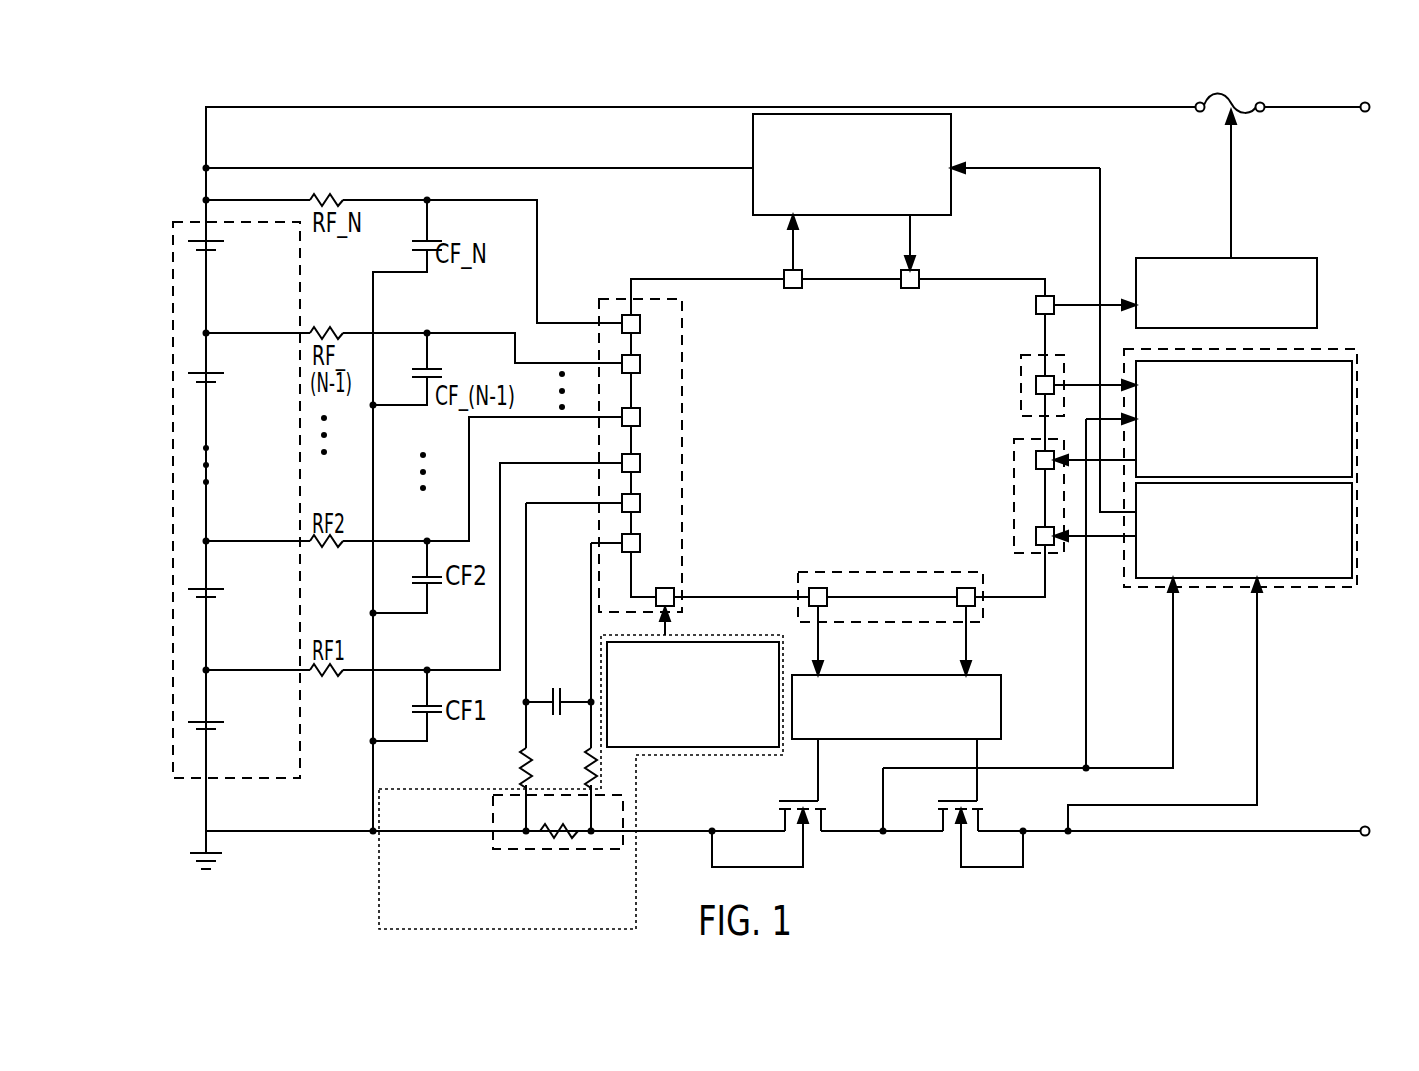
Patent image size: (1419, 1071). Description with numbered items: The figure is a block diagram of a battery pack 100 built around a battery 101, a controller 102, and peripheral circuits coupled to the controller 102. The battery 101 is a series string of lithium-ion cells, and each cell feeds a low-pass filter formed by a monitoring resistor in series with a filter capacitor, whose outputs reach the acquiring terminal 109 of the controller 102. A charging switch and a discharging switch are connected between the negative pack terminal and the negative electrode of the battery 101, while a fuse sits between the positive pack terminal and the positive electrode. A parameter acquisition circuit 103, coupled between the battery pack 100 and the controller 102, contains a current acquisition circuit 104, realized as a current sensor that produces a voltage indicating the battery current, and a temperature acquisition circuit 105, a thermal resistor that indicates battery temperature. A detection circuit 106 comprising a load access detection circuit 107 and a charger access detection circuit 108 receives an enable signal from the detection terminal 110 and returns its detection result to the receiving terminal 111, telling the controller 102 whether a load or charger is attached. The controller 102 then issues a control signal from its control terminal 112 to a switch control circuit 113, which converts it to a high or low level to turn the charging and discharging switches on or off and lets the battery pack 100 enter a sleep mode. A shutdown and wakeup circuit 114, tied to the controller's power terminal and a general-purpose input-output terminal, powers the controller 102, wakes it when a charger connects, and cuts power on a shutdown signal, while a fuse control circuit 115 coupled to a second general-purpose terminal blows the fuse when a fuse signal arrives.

The battery pack 100 is at (190, 116).
The battery 101 is at (173, 420).
The controller 102 is at (831, 420).
The parameter acquisition circuit 103 is at (581, 733).
The current acquisition circuit 104 is at (578, 849).
The temperature acquisition circuit 105 is at (708, 635).
The detection circuit 106 is at (1141, 590).
The load access detection circuit 107 is at (1357, 420).
The charger access detection circuit 108 is at (1357, 530).
The acquiring terminal 109 is at (682, 400).
The detection terminal 110 is at (1021, 385).
The receiving terminal 111 is at (1014, 483).
The control terminal 112 is at (888, 572).
The switch control circuit 113 is at (1001, 735).
The shutdown and wakeup circuit 114 is at (951, 146).
The fuse control circuit 115 is at (1253, 258).